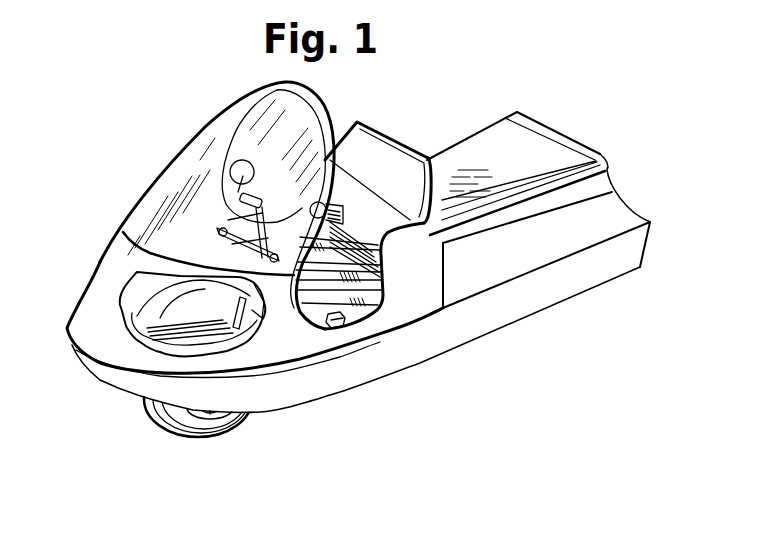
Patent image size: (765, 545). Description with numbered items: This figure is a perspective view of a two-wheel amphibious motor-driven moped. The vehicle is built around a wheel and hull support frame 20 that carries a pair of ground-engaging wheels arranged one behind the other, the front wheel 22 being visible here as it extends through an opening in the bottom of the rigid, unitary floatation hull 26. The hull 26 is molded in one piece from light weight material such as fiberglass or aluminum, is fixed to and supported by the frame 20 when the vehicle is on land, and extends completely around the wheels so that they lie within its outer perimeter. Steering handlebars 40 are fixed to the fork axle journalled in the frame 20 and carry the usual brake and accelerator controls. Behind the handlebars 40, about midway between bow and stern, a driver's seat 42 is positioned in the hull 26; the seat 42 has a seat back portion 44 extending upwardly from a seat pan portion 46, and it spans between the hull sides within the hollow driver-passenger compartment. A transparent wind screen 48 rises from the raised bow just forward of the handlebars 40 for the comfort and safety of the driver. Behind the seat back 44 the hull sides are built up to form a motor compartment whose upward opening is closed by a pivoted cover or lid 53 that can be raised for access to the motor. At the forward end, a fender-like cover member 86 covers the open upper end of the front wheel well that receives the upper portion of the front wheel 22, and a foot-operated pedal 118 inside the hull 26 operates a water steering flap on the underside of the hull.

The wheel and hull support frame 20 is at (374, 307).
The front wheel 22 is at (178, 430).
The floatation hull 26 is at (447, 350).
The steering handlebars 40 is at (246, 183).
The driver's seat 42 is at (388, 118).
The seat back portion 44 is at (398, 138).
The seat pan portion 46 is at (378, 213).
The transparent wind screen 48 is at (157, 181).
The cover or lid 53 is at (517, 165).
The fender-like cover member 86 is at (200, 266).
The foot-operated pedal 118 is at (332, 324).